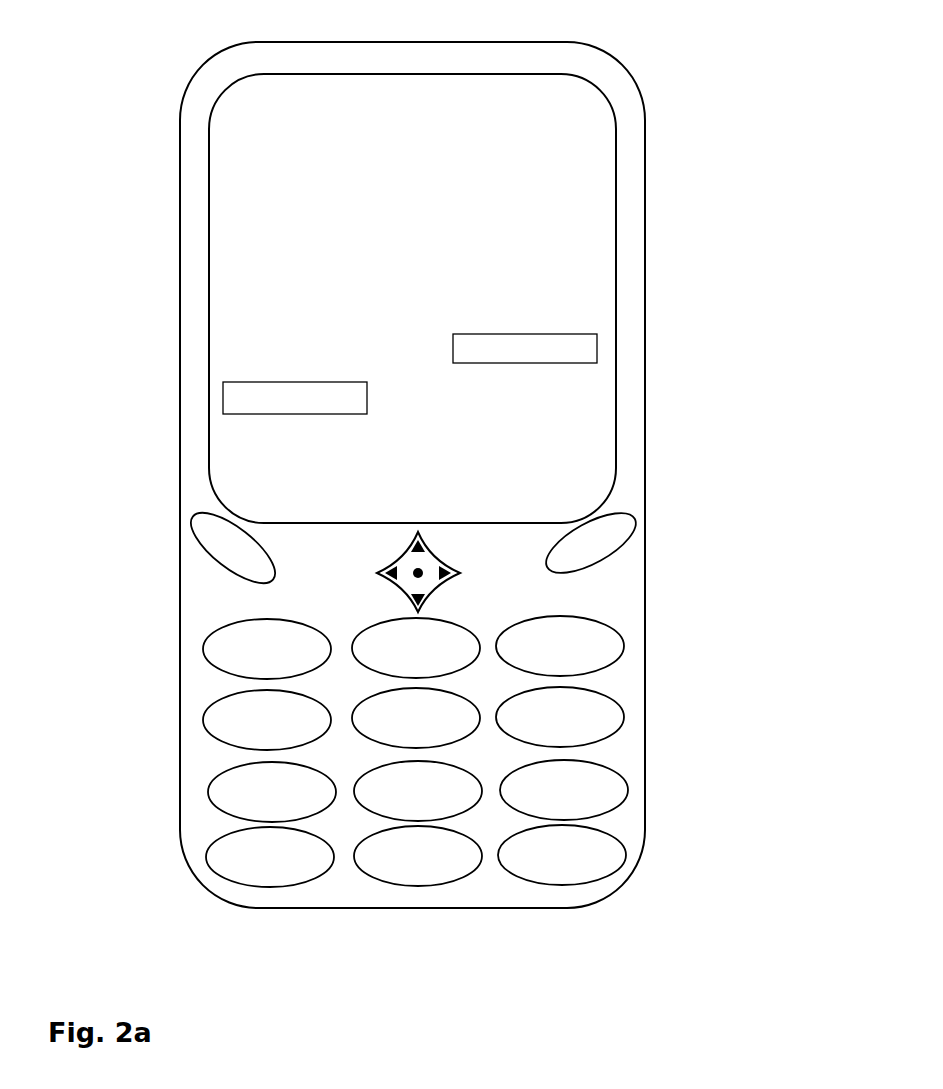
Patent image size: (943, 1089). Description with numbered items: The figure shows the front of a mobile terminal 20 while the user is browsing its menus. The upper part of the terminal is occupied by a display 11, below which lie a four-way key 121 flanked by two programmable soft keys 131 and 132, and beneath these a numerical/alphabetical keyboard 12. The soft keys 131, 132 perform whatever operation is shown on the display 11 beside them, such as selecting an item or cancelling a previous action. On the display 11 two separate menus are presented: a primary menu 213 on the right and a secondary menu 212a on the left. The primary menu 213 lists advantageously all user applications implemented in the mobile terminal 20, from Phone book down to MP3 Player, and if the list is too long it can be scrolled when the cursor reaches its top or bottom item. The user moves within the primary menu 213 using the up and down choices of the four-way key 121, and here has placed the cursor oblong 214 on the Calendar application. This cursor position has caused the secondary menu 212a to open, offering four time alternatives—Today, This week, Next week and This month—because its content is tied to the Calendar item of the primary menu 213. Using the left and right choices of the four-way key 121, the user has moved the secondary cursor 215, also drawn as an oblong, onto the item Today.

The mobile terminal 20 is at (653, 158).
The display 11 is at (618, 297).
The primary menu 213 is at (604, 390).
The cursor oblong 214 is at (454, 349).
The secondary cursor 215 is at (224, 396).
The secondary menu 212a is at (222, 443).
The four-way key 121 is at (466, 577).
The soft key 131 is at (598, 548).
The soft key 132 is at (226, 556).
The numerical/alphabetical keyboard 12 is at (208, 755).